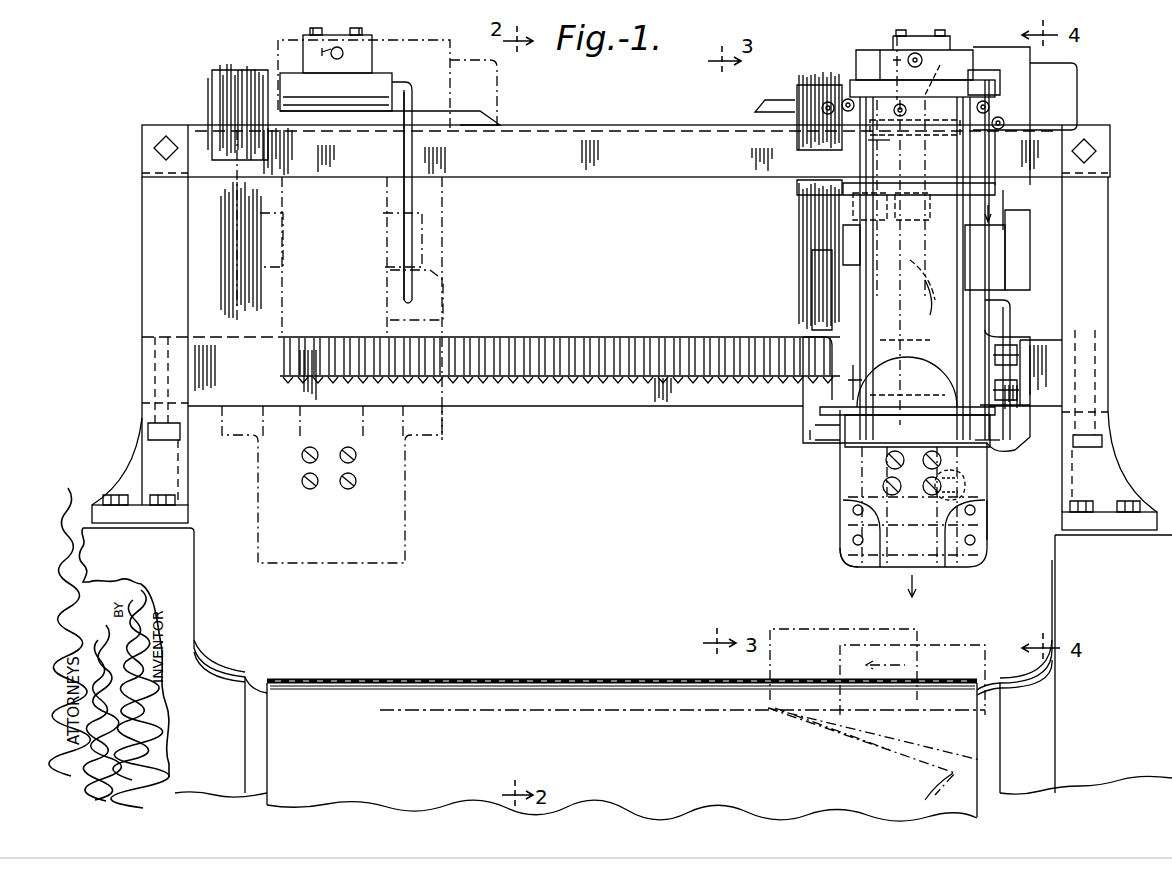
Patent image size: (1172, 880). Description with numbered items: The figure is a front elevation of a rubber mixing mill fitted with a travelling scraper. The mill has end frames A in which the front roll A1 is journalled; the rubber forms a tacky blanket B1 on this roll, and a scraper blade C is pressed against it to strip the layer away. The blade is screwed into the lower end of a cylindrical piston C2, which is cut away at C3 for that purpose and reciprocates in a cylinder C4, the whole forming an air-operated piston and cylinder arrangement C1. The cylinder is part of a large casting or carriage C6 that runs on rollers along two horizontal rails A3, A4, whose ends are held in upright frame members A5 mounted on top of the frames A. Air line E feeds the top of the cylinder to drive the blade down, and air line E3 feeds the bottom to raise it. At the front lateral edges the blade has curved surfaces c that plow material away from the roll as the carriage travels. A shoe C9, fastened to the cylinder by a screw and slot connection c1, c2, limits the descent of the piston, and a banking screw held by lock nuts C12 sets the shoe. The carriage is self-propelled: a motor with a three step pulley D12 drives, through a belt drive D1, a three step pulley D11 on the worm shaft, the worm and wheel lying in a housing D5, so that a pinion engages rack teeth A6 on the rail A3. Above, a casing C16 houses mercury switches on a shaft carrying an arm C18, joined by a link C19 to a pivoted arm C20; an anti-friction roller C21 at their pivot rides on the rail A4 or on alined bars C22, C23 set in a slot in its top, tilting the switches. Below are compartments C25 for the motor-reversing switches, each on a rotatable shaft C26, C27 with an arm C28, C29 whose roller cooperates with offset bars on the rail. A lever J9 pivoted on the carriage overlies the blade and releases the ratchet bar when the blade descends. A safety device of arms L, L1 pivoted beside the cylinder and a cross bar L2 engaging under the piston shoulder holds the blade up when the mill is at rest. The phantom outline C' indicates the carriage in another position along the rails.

The end frame A is at (625, 662).
The roll A1 is at (626, 752).
The lower horizontal cross member or rail A3 is at (602, 373).
The upper horizontal cross member or rail A4 is at (626, 151).
The upright frame member A5 is at (148, 232).
The rack teeth A6 is at (562, 342).
The blanket B1 is at (368, 683).
The scraper blade C is at (940, 313).
The carriage in alternate position C' is at (332, 496).
The air-operated piston and cylinder arrangement C1 is at (1020, 208).
The cylindrical piston C2 is at (903, 365).
The cut-away portion C3 is at (925, 312).
The cylinder C4 is at (932, 280).
The casting or carriage C6 is at (820, 345).
The shoe C9 is at (990, 506).
The lock nuts C12 is at (990, 447).
The casing C16 is at (893, 50).
The arm C18 is at (916, 52).
The link C19 is at (895, 62).
The arm C20 is at (928, 92).
The anti-friction roller C21 is at (903, 118).
The bar C22 is at (760, 112).
The bar C23 is at (480, 130).
The casings or compartments C25 is at (1003, 92).
The rotatable shaft C26 is at (988, 108).
The rotatable shaft C27 is at (826, 100).
The arm C28 is at (1004, 124).
The arm C29 is at (845, 112).
The belt drive D1 is at (785, 213).
The housing D5 is at (1008, 262).
The three step pulley D11 is at (805, 288).
The three step pulley D12 is at (805, 102).
The air line E is at (998, 182).
The air line E3 is at (1012, 336).
The lever J9 is at (838, 440).
The arm L is at (990, 385).
The arm L1 is at (850, 377).
The cross bar L2 is at (920, 410).
The curved surfaces c is at (812, 572).
The screw c1 is at (1022, 481).
The slot c2 is at (1024, 499).